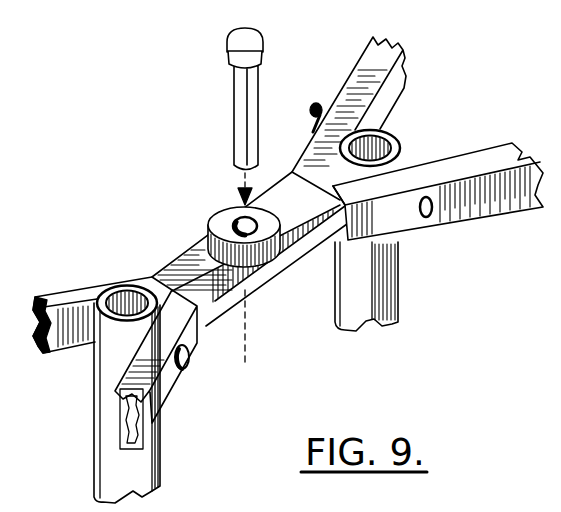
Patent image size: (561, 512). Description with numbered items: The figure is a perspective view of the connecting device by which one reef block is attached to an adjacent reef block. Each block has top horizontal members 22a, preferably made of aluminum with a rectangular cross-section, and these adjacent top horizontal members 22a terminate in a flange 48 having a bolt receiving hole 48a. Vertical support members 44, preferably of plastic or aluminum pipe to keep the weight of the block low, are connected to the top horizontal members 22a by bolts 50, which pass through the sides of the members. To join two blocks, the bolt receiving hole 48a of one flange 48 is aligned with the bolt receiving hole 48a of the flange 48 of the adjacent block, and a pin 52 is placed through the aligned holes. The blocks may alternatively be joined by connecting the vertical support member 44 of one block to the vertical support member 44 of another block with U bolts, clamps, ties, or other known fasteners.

The top horizontal member 22a is at (377, 57).
The vertical support member 44 is at (153, 466).
The flange 48 is at (288, 247).
The bolt receiving hole 48a is at (240, 221).
The bolt 50 is at (318, 105).
The pin 52 is at (240, 107).